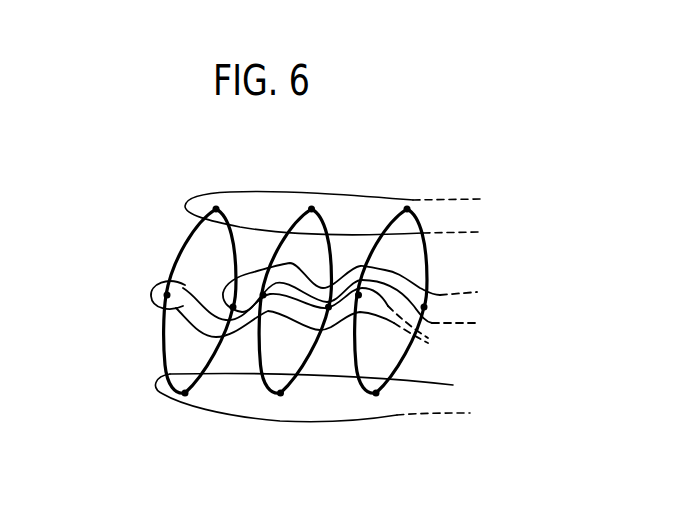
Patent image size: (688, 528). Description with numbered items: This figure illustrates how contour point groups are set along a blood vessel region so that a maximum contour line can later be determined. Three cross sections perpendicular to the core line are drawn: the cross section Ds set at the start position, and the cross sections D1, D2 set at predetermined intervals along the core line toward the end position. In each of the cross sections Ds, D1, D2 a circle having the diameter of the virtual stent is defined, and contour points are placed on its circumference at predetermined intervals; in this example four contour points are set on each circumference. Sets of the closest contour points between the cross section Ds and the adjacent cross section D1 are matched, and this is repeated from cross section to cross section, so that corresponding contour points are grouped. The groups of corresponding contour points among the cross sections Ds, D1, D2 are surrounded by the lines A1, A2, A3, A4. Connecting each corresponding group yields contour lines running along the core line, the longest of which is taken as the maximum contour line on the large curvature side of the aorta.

The cross section Ds is at (185, 246).
The cross section D1 is at (279, 249).
The cross section D2 is at (427, 258).
The line A1 is at (346, 199).
The line A2 is at (229, 284).
The line A3 is at (151, 290).
The line A4 is at (197, 406).